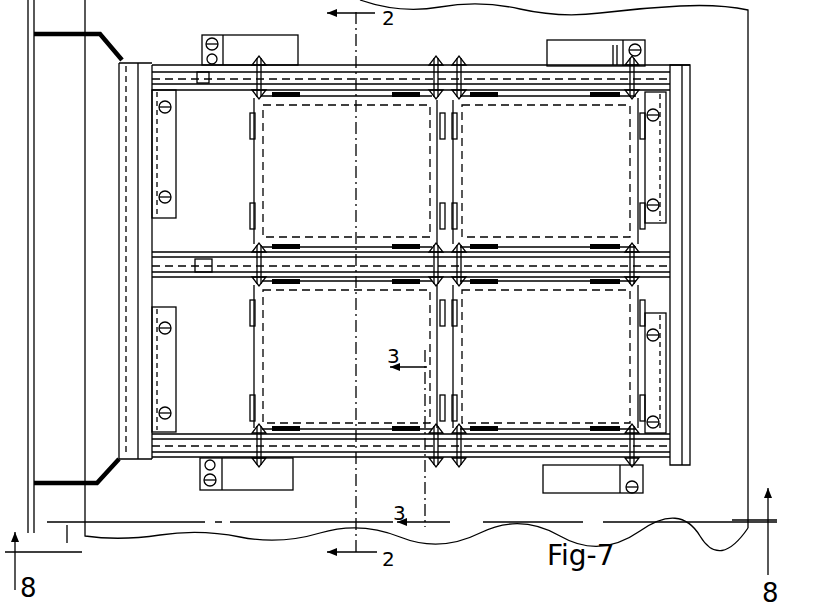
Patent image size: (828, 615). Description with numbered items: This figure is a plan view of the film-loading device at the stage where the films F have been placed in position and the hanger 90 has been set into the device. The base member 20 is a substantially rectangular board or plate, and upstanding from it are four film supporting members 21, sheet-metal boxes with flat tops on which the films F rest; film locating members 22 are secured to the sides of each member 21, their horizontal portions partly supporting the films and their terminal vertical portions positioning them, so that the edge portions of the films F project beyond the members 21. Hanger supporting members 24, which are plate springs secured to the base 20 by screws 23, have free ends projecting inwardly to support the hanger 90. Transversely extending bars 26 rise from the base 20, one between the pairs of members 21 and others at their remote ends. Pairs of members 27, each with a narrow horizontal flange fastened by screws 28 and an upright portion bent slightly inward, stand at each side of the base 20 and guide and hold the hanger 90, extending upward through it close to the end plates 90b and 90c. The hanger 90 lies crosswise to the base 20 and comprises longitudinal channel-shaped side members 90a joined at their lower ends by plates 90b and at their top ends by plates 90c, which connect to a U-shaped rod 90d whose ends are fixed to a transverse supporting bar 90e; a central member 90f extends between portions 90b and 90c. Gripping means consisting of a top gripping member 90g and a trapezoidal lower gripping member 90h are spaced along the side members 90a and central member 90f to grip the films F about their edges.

The base member 20 is at (746, 60).
The film supporting member 21 is at (536, 108).
The film locating member 22 is at (615, 250).
The screw 23 is at (207, 52).
The hanger supporting member 24 is at (233, 38).
The transversely extending bar 26 is at (208, 85).
The guide member 27 is at (172, 153).
The screw 28 is at (173, 198).
The film hanger 90 is at (383, 70).
The side member 90a is at (478, 66).
The lower plate 90b is at (684, 268).
The upper plate 90c is at (120, 220).
The U-shaped rod 90d is at (115, 34).
The transverse supporting bar 90e is at (37, 168).
The central member 90f is at (202, 244).
The top gripping member 90g is at (262, 57).
The lower gripping member 90h is at (264, 64).
The film F is at (285, 175).